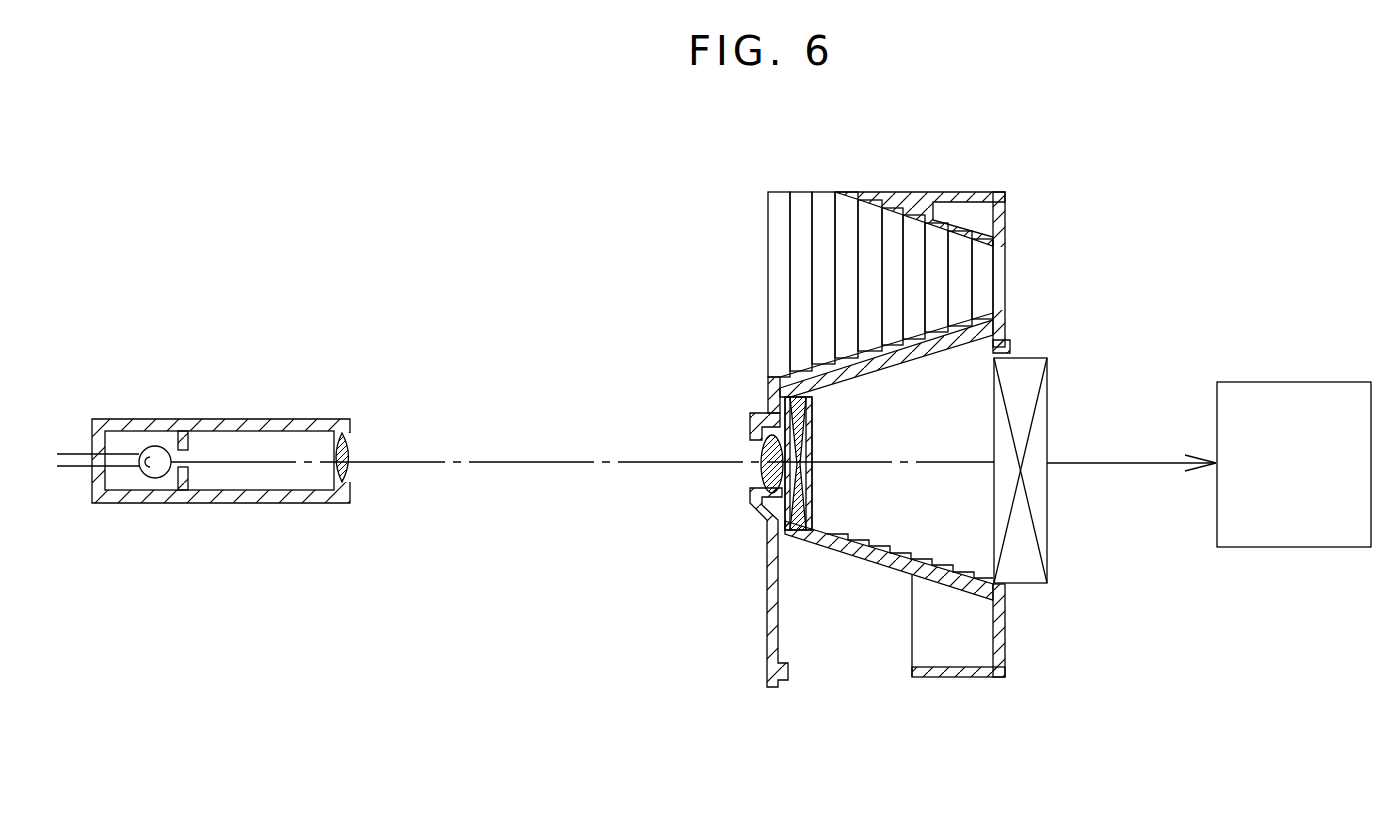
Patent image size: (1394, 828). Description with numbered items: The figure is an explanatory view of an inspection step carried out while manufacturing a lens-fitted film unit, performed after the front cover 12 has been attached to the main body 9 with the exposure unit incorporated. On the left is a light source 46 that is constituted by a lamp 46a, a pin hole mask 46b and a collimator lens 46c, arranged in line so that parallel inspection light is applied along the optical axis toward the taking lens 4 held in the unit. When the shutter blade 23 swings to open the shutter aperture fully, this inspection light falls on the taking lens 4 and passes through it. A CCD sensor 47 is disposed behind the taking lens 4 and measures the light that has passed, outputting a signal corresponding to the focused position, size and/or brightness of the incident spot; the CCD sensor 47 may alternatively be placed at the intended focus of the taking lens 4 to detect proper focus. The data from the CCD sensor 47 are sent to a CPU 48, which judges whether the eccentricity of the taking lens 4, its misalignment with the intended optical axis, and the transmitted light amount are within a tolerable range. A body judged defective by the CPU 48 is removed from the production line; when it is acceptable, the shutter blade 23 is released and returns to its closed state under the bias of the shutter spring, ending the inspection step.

The taking lens 4 is at (764, 472).
The main body 9 is at (962, 680).
The front cover 12 is at (890, 192).
The shutter blade 23 is at (806, 423).
The light source 46 is at (242, 503).
The lamp 46a is at (154, 446).
The pin hole mask 46b is at (189, 451).
The collimator lens 46c is at (350, 450).
The CCD sensor 47 is at (1050, 410).
The CPU 48 is at (1293, 381).